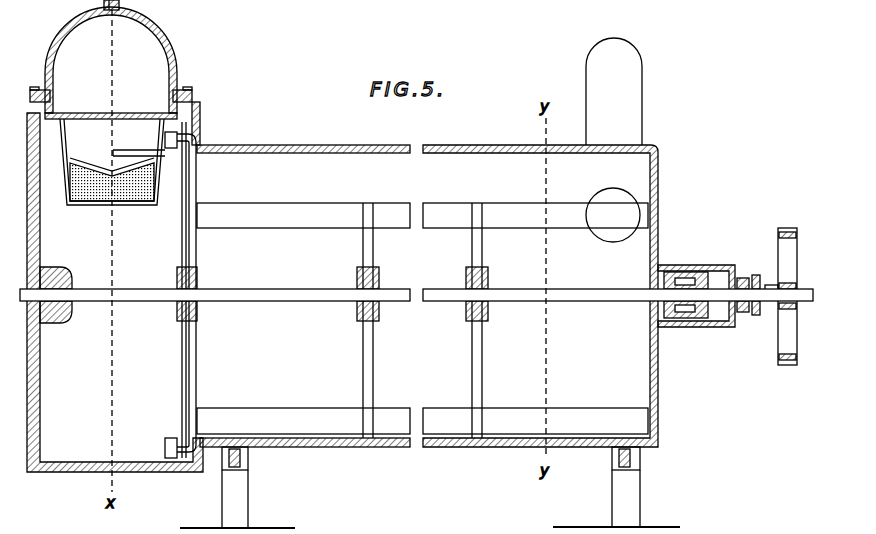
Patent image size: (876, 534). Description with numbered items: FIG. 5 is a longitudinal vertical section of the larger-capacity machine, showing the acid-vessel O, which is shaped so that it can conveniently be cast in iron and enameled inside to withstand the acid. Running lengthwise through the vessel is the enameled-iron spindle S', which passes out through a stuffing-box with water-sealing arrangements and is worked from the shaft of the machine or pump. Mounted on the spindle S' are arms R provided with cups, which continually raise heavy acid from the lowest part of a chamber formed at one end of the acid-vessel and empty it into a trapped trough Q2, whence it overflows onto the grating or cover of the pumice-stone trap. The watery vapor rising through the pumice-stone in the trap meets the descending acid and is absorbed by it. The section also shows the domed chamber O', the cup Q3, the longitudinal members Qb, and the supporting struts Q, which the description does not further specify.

The dome cap O' is at (111, 59).
The cup / receptacle Q3 is at (104, 164).
The trapped trough Q2 is at (143, 150).
The arms R is at (190, 254).
The acid-vessel O is at (427, 242).
The longitudinal slats Qb is at (422, 318).
The struts Q is at (427, 320).
The spindle S' is at (416, 309).